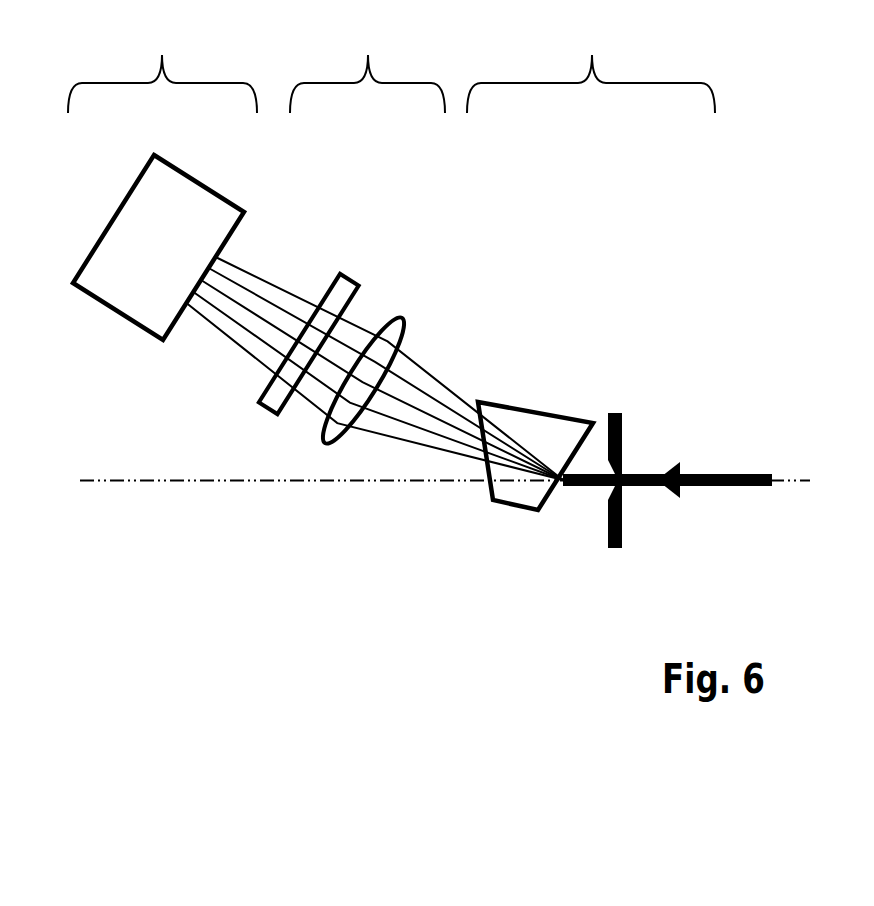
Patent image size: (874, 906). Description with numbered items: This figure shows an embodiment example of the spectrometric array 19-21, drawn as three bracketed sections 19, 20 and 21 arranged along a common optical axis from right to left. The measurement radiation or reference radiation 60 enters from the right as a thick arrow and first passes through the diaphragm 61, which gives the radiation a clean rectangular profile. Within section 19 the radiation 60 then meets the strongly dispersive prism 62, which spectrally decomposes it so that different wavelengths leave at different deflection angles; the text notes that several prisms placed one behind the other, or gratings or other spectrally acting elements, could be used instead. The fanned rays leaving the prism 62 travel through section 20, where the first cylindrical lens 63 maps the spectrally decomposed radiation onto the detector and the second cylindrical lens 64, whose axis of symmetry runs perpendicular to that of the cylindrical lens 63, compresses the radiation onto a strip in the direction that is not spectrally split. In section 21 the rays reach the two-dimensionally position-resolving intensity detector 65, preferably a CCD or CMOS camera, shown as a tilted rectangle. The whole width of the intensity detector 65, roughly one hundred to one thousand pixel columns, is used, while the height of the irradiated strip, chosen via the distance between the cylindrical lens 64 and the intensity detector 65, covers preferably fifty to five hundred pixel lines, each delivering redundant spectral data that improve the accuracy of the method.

The spectrometric array section 19 is at (591, 59).
The spectrometric array section 20 is at (367, 59).
The spectrometric array section 21 is at (162, 59).
The measurement radiation or reference radiation 60 is at (725, 472).
The diaphragm 61 is at (614, 410).
The strongly dispersive prism 62 is at (545, 410).
The first cylindrical lens 63 is at (408, 317).
The second cylindrical lens 64 is at (348, 273).
The intensity detector 65 is at (110, 307).